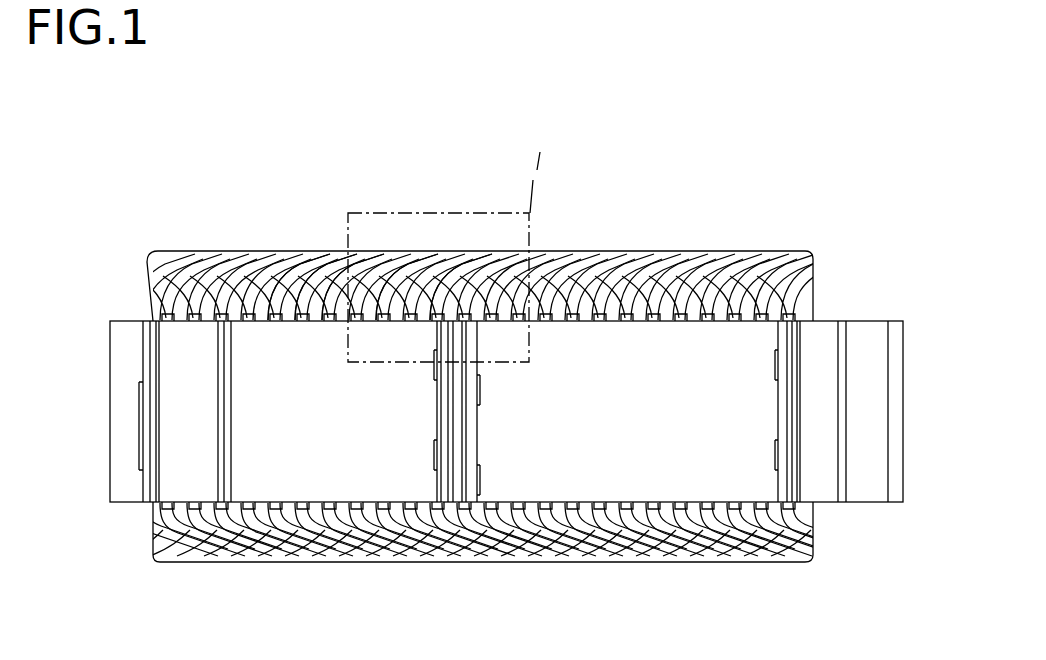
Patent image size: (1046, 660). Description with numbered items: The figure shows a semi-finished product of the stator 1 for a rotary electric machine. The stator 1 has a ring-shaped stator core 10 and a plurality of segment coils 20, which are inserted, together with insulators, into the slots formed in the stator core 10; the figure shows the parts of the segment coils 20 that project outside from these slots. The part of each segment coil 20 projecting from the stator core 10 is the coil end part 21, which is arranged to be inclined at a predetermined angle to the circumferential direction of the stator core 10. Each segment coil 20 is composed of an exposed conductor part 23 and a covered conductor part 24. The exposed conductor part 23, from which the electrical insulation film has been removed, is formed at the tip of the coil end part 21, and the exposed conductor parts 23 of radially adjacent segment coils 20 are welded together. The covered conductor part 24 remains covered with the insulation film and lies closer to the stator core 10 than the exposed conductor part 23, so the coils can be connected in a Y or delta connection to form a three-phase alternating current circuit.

The stator 1 is at (190, 137).
The stator core 10 is at (125, 398).
The segment coil 20 is at (320, 552).
The coil end part 21 is at (346, 153).
The exposed conductor part 23 is at (330, 258).
The covered conductor part 24 is at (296, 262).